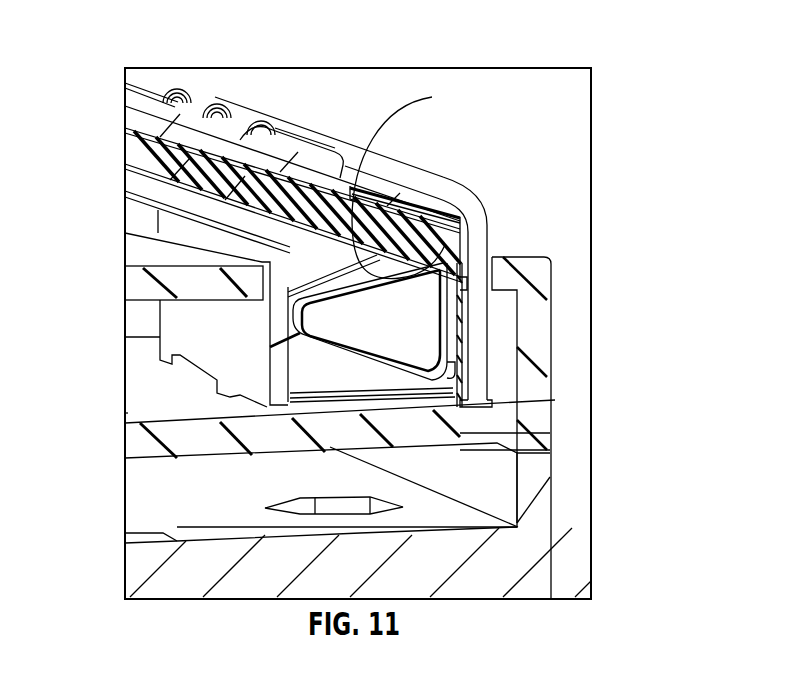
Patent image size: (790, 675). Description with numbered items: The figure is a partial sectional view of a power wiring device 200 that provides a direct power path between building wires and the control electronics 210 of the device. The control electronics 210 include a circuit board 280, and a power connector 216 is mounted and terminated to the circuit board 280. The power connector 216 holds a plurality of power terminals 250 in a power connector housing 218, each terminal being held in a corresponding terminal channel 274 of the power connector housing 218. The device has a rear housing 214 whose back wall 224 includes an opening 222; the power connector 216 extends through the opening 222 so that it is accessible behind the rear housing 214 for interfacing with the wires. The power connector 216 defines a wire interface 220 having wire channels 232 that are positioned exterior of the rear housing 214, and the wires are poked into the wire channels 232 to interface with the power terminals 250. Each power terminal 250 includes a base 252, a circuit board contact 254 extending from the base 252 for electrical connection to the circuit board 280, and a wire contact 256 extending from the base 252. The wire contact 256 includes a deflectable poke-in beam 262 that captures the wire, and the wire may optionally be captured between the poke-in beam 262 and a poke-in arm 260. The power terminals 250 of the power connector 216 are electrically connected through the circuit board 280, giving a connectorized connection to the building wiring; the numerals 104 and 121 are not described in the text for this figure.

The power wiring device 200 is at (562, 183).
The wire interface 220 is at (160, 86).
The coil 104 is at (190, 122).
The wire channels 232 is at (247, 130).
The poke-in arm 260 is at (437, 168).
The power connector 216 is at (457, 170).
The poke-in beam 262 is at (352, 188).
The wire contact 256 is at (436, 98).
The opening 222 is at (487, 255).
The back wall 224 is at (137, 255).
The rear housing 214 is at (138, 278).
The control electronics 210 is at (121, 409).
The power terminals 250 is at (460, 300).
The power connector housing 218 is at (478, 335).
The terminal channels 274 is at (300, 353).
The circuit board 280 is at (155, 447).
The base 252 is at (517, 350).
The circuit board contact 254 is at (527, 457).
The base 121 is at (535, 558).